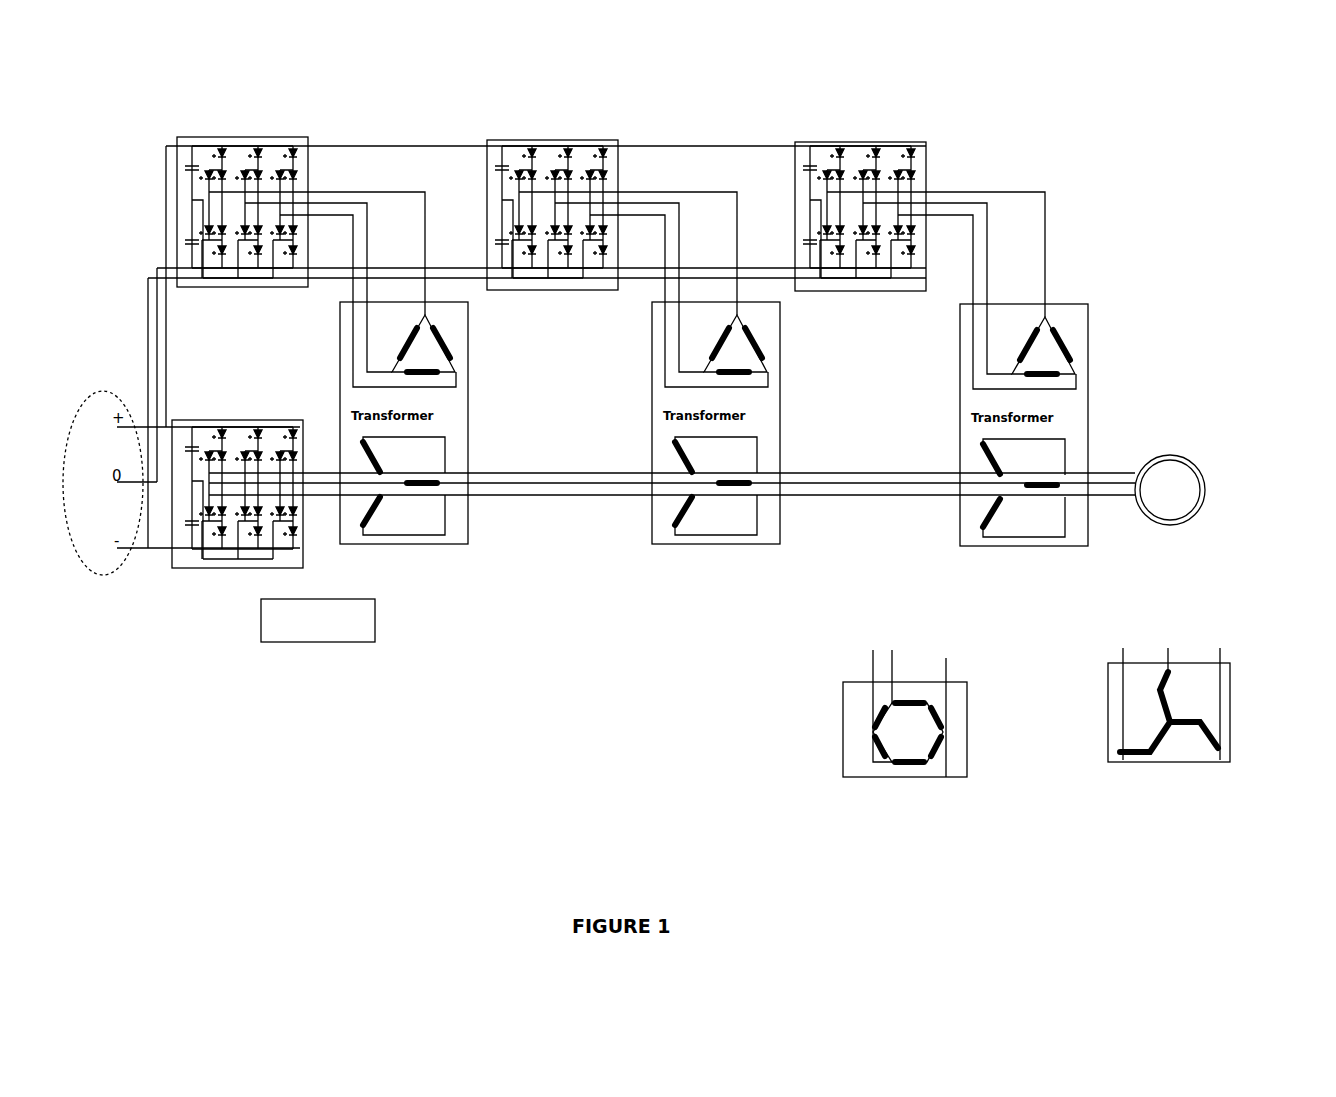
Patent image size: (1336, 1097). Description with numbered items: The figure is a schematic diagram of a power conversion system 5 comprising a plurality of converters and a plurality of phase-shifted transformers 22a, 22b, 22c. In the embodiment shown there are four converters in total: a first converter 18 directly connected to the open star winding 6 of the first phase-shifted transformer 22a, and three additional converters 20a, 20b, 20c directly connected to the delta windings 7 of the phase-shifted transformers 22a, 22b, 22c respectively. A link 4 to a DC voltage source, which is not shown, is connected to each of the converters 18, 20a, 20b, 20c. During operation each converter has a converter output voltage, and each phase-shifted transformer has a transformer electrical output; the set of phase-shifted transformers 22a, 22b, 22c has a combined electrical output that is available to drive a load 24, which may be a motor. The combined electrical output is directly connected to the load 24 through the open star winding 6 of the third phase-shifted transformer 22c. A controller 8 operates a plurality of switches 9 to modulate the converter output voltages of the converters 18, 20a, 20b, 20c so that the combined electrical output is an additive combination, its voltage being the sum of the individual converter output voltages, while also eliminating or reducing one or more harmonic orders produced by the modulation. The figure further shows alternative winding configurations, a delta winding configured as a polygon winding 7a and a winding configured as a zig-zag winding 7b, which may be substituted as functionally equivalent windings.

The link 4 is at (85, 576).
The power conversion system 5 is at (600, 111).
The open star winding 6 is at (445, 447).
The delta winding 7 is at (452, 344).
The polygon winding 7a is at (978, 748).
The zig-zag winding 7b is at (1195, 758).
The controller 8 is at (332, 643).
The switches 9 is at (222, 287).
The first converter 18 is at (175, 570).
The additional converter 20a is at (250, 135).
The additional converter 20b is at (512, 138).
The additional converter 20c is at (838, 141).
The first phase-shifted transformer 22a is at (422, 545).
The second phase-shifted transformer 22b is at (720, 546).
The third phase-shifted transformer 22c is at (1023, 548).
The load 24 is at (1190, 462).